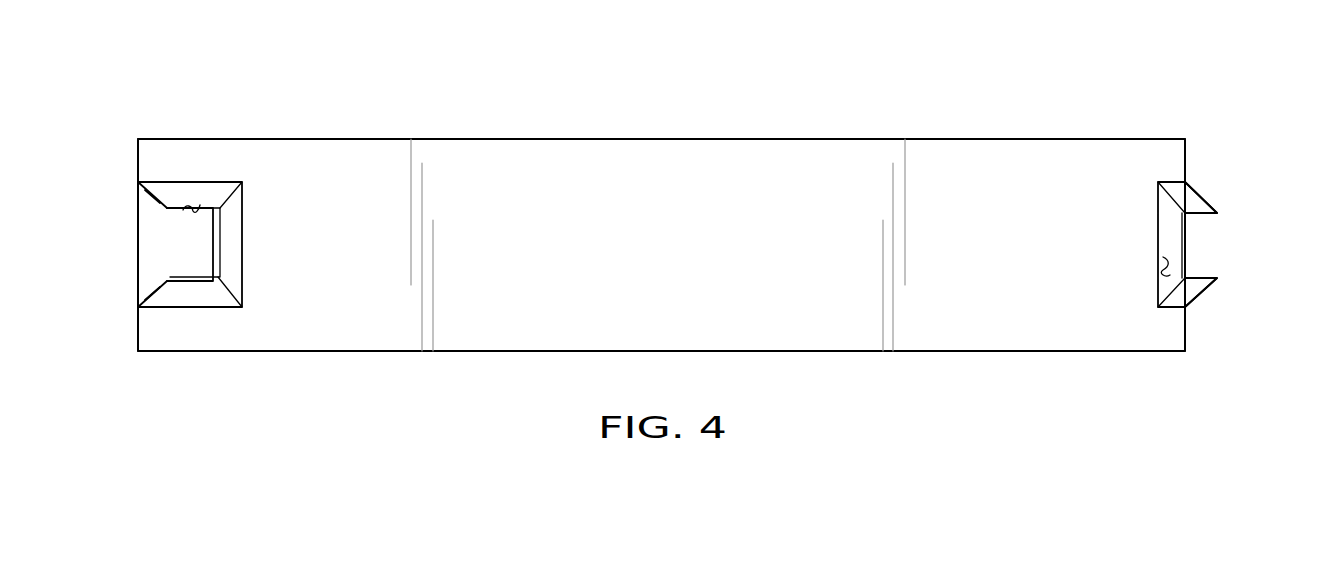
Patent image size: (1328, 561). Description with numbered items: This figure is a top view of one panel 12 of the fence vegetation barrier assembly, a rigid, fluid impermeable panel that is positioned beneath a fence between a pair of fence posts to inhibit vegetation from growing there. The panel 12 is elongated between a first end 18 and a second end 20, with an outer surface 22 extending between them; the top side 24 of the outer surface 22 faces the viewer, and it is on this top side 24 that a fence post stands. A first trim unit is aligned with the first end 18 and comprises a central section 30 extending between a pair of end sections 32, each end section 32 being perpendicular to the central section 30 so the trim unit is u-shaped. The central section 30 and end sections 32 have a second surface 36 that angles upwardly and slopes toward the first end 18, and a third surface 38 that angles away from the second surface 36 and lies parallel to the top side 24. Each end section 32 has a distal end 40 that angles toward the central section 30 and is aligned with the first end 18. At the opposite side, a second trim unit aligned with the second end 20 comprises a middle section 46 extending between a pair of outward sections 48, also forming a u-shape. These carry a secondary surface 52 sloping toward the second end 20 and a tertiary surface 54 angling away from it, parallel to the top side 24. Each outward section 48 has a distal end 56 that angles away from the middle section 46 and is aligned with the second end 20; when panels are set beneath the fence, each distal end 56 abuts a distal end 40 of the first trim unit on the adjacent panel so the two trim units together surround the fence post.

The panel 12 is at (648, 139).
The first end 18 is at (138, 158).
The second end 20 is at (1185, 160).
The outer surface 22 is at (492, 192).
The top side 24 is at (1005, 157).
The central section 30 is at (243, 200).
The end section 32 is at (205, 182).
The second surface 36 is at (217, 290).
The third surface 38 is at (190, 207).
The distal end 40 is at (153, 198).
The middle section 46 is at (1158, 210).
The outward section 48 is at (1177, 190).
The secondary surface 52 is at (1158, 267).
The tertiary surface 54 is at (1183, 228).
The distal end 56 is at (1207, 203).